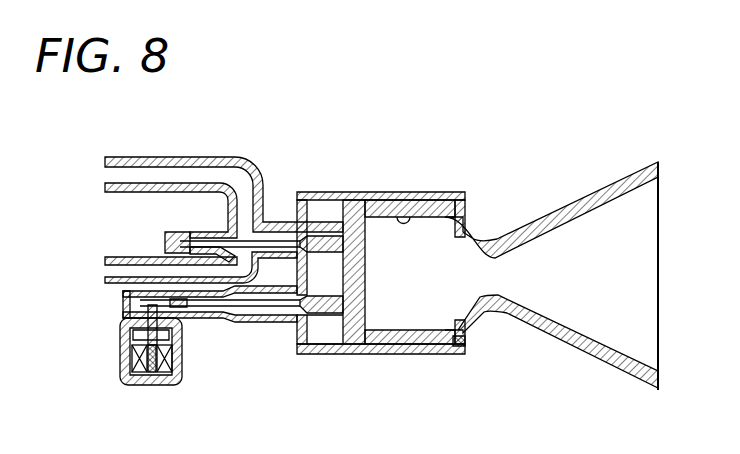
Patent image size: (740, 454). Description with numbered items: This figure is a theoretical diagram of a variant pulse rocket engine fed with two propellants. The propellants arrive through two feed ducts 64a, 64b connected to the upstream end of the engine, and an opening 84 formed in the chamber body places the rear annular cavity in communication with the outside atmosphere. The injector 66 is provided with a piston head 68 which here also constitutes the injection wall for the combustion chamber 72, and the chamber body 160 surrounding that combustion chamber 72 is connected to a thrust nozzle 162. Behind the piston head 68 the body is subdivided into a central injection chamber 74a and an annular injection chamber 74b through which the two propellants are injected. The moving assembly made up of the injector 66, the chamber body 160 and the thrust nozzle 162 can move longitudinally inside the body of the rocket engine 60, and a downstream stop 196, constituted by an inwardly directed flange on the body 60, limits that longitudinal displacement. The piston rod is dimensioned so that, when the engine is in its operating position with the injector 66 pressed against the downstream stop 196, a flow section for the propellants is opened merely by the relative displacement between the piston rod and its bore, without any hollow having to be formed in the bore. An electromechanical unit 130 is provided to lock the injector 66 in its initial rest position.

The feed duct 64a is at (184, 157).
The feed duct 64b is at (125, 256).
The opening 84 is at (182, 232).
The body of the rocket engine 60 is at (331, 191).
The chamber body 160 is at (402, 212).
The thrust nozzle 162 is at (578, 207).
The combustion chamber 72 is at (421, 263).
The injector 66 is at (363, 270).
The central injection chamber 74a is at (325, 284).
The annular injection chamber 74b is at (300, 345).
The piston head 68 is at (313, 334).
The electromechanical unit 130 is at (182, 372).
The downstream stop 196 is at (467, 351).